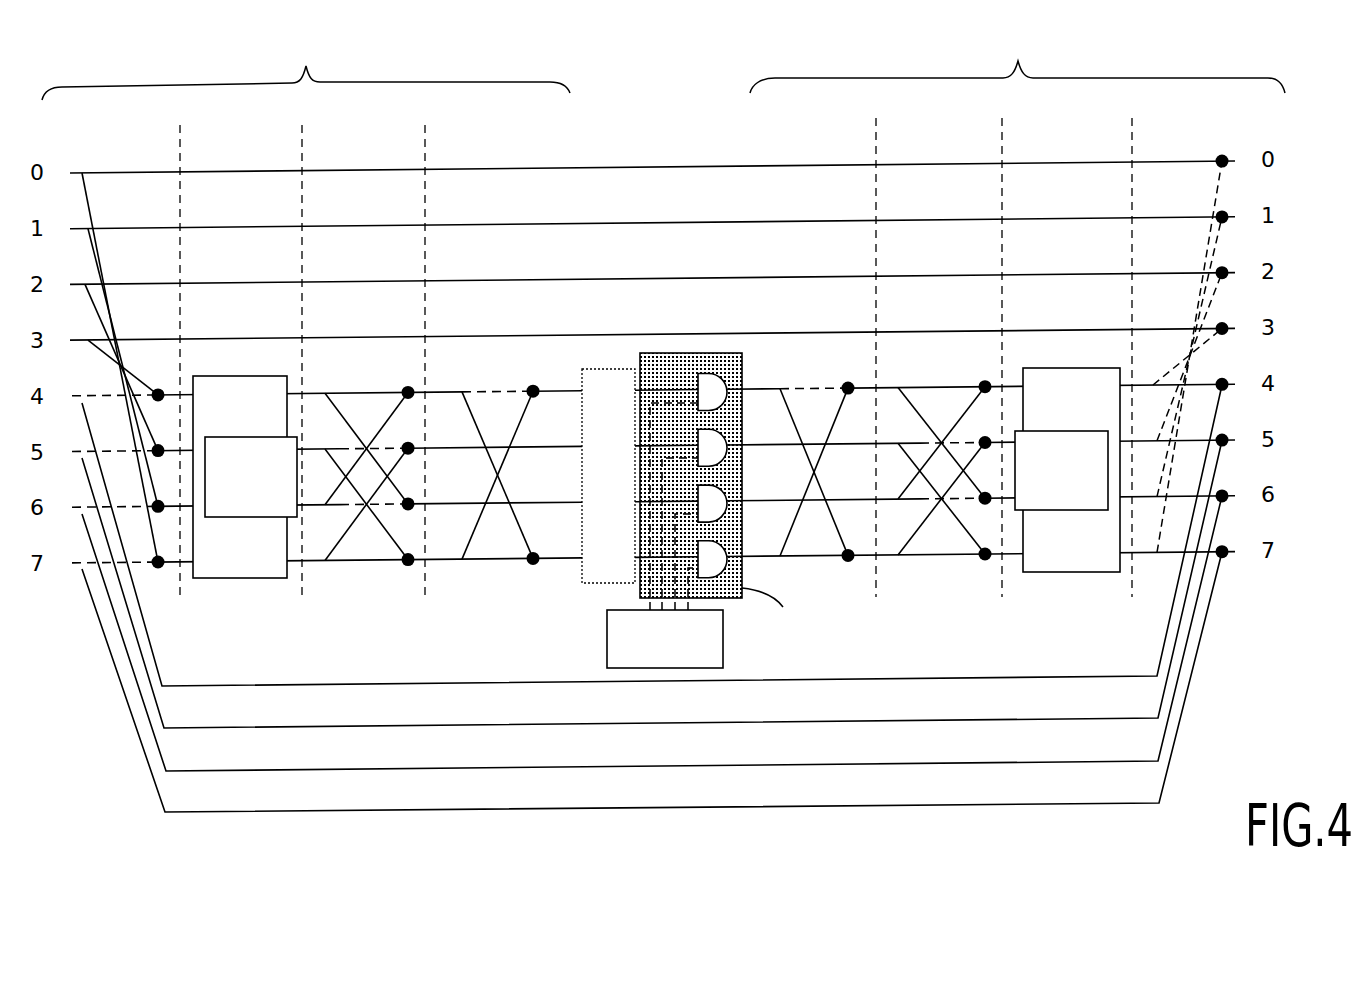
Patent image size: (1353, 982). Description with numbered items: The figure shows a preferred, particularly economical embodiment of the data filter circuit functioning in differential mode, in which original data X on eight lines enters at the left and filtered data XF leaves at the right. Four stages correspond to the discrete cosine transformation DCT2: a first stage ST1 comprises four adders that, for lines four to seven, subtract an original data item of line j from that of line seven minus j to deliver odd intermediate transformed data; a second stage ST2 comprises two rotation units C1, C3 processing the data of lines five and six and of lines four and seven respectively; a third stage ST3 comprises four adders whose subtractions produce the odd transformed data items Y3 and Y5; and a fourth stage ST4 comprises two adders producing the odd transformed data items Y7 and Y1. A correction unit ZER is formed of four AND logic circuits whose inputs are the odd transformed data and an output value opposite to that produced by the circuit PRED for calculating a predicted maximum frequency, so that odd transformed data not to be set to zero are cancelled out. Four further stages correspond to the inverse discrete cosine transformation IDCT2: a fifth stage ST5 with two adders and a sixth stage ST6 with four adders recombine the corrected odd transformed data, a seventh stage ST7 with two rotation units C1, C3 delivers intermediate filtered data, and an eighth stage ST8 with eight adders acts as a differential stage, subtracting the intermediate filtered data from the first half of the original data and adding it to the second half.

The original data X is at (93, 339).
The filtered data XF is at (1250, 330).
The discrete cosine transformation DCT2 is at (306, 66).
The inverse discrete cosine transformation IDCT2 is at (1017, 59).
The first stage ST1 is at (146, 356).
The second stage ST2 is at (264, 355).
The third stage ST3 is at (375, 355).
The fourth stage ST4 is at (501, 338).
The fifth stage ST5 is at (828, 353).
The sixth stage ST6 is at (950, 352).
The seventh stage ST7 is at (1089, 351).
The eighth stage ST8 is at (1187, 328).
The rotation unit C1 is at (656, 474).
The rotation unit C3 is at (656, 473).
The odd transformed data item Y7 is at (646, 391).
The odd transformed data item Y3 is at (646, 447).
The odd transformed data item Y5 is at (646, 503).
The odd transformed data item Y1 is at (646, 558).
The correction unit ZER is at (736, 498).
The circuit for calculating a predicted maximum frequency PRED is at (665, 535).